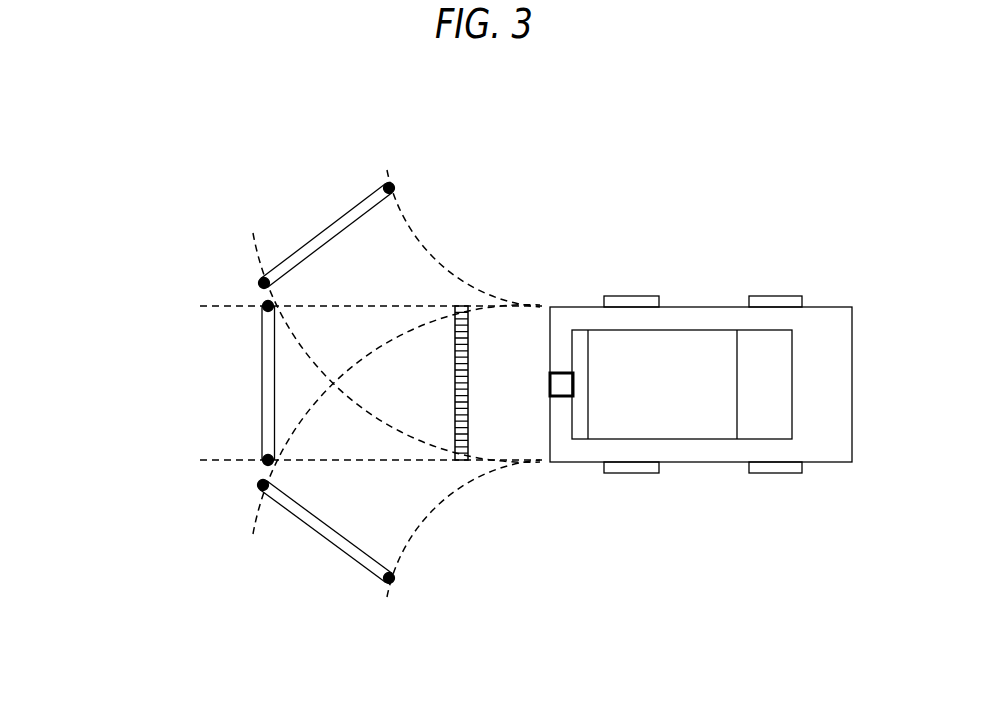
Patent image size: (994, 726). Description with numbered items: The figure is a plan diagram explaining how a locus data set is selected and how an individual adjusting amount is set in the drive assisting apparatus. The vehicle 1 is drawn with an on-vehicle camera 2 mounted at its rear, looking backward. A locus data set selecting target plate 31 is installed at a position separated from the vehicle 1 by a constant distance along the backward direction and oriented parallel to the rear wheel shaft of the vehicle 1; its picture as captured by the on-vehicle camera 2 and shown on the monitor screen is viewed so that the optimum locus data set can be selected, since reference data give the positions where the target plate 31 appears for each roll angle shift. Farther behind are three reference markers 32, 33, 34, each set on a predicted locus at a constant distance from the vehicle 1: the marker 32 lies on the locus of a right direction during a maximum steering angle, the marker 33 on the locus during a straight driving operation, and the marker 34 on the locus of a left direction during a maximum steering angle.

The vehicle 1 is at (810, 307).
The on-vehicle camera 2 is at (558, 397).
The locus data set selecting target plate 31 is at (463, 462).
The marker 32 is at (267, 504).
The marker 33 is at (258, 309).
The marker 34 is at (267, 264).